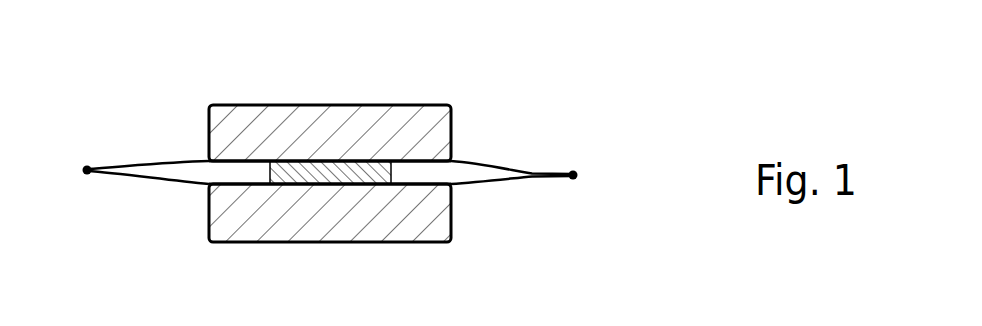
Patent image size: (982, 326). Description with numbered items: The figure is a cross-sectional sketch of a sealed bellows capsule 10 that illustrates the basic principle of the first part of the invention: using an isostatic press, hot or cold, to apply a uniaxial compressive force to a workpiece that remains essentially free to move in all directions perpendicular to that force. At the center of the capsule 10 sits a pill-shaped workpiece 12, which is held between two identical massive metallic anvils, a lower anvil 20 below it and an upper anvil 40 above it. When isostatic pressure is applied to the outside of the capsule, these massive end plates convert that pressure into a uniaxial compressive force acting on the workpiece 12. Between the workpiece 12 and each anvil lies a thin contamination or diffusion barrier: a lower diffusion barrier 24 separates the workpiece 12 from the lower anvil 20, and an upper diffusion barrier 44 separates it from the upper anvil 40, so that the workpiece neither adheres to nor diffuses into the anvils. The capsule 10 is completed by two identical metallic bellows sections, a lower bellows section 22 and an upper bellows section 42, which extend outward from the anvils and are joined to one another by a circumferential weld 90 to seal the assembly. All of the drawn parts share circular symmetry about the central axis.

The capsule 10 is at (186, 125).
The workpiece 12 is at (300, 160).
The lower anvil 20 is at (238, 212).
The lower bellows section 22 is at (487, 187).
The lower diffusion barrier 24 is at (357, 184).
The upper anvil 40 is at (252, 128).
The upper bellows section 42 is at (473, 158).
The upper diffusion barrier 44 is at (360, 160).
The circumferential weld 90 is at (573, 158).